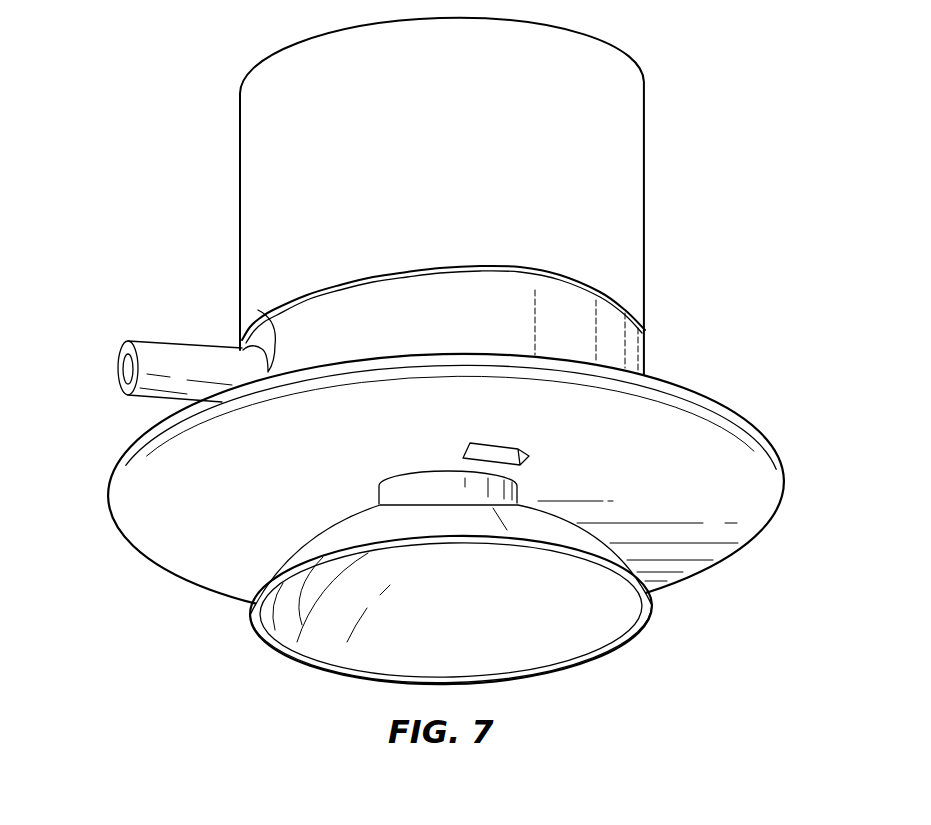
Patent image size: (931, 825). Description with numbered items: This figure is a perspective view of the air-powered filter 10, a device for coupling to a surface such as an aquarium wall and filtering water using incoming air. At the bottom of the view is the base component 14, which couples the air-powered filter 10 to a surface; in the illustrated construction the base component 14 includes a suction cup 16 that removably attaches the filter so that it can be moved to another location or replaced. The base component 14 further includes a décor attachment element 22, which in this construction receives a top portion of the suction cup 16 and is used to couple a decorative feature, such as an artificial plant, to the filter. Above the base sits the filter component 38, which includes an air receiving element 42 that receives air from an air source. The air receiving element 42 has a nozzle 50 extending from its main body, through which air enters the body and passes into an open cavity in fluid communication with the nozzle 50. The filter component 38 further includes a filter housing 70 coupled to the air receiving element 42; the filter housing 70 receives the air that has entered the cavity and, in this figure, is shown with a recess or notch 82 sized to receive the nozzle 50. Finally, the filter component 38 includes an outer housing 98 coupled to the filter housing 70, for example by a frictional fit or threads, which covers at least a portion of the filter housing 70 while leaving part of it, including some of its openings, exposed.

The air-powered filter 10 is at (406, 364).
The base component 14 is at (406, 491).
The suction cup 16 is at (619, 660).
The décor attachment element 22 is at (406, 451).
The filter component 38 is at (435, 196).
The air receiving element 42 is at (140, 328).
The nozzle 50 is at (200, 360).
The filter housing 70 is at (566, 305).
The notch 82 is at (258, 310).
The outer housing 98 is at (627, 148).